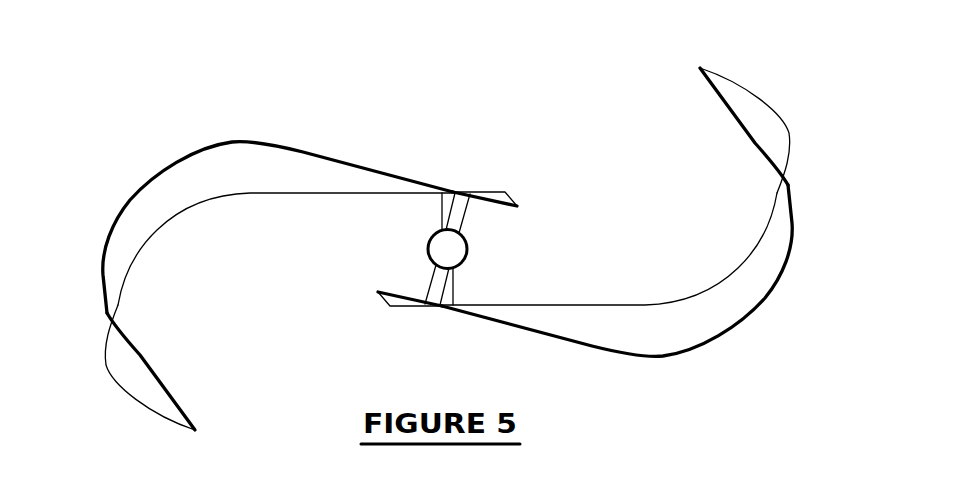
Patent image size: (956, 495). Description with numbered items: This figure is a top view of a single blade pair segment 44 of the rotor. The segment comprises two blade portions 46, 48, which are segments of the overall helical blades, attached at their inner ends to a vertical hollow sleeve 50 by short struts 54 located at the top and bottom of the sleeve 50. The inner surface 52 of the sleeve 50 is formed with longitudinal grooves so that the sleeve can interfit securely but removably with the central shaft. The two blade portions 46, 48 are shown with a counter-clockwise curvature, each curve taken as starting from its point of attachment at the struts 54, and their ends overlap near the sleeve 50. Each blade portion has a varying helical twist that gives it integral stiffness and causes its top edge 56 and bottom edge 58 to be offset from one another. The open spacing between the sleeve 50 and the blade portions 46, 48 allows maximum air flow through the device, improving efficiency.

The blade pair segment 44 is at (538, 144).
The blade portion 46 is at (305, 152).
The blade portion 48 is at (775, 297).
The vertical hollow sleeve 50 is at (444, 249).
The inner surface of the sleeve 52 is at (442, 250).
The strut 54 is at (445, 205).
The top edge 56 is at (133, 184).
The bottom edge 58 is at (152, 232).